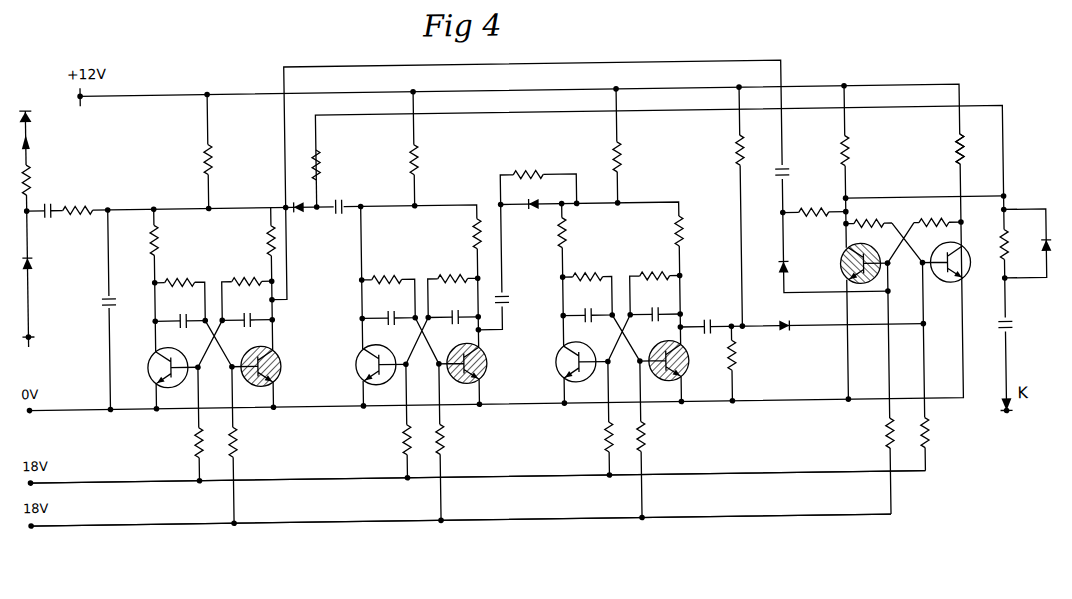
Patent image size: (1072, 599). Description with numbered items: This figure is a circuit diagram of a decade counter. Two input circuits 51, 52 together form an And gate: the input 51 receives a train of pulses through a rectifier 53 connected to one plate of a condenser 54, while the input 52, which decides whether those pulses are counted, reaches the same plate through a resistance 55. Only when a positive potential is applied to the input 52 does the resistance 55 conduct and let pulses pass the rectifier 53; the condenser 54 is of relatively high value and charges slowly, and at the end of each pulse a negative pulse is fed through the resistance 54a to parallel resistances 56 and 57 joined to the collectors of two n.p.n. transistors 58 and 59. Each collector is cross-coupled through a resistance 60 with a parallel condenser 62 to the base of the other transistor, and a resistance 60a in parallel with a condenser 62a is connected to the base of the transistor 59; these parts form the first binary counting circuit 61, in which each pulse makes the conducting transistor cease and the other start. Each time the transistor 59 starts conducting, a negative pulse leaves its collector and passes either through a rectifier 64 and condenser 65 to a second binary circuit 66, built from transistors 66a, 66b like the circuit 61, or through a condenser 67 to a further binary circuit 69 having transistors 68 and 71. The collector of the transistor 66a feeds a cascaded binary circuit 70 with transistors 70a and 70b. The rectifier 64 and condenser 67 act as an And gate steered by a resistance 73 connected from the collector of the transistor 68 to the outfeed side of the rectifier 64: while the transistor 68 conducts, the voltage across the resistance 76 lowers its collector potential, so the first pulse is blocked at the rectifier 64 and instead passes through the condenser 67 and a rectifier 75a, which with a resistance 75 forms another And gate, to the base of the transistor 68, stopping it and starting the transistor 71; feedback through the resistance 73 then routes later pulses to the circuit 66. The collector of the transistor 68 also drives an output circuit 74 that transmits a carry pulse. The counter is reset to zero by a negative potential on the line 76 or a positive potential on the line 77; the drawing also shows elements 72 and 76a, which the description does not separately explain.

The input circuit 51 is at (28, 341).
The input circuit 52 is at (25, 124).
The rectifier 53 is at (31, 262).
The condenser 54 is at (44, 202).
The resistance 54a is at (101, 197).
The resistance 55 is at (33, 173).
The resistance 56 is at (167, 240).
The resistance 57 is at (270, 239).
The transistor 58 is at (147, 362).
The transistor 59 is at (280, 365).
The resistance 60 is at (230, 276).
The resistance 60a is at (179, 292).
The first binary counting circuit 61 is at (203, 393).
The condenser 62 is at (247, 310).
The condenser 62a is at (180, 312).
The rectifier 64 is at (297, 195).
The condenser 65 is at (346, 200).
The second binary circuit 66 is at (432, 232).
The transistor 66a is at (450, 352).
The transistor 66b is at (348, 372).
The condenser 67 is at (780, 181).
The transistor 68 is at (841, 268).
The binary circuit 69 is at (885, 300).
The binary circuit 70 is at (618, 268).
The transistor 70a is at (653, 353).
The transistor 70b is at (556, 362).
The transistor 71 is at (944, 282).
The collector resistor 72 is at (965, 153).
The resistance 73 is at (328, 161).
The output circuit 74 is at (1007, 301).
The resistance 75 is at (836, 219).
The rectifier 75a is at (784, 287).
The resistance 76 is at (854, 153).
The negative supply line 76a is at (310, 477).
The line 77 is at (306, 505).